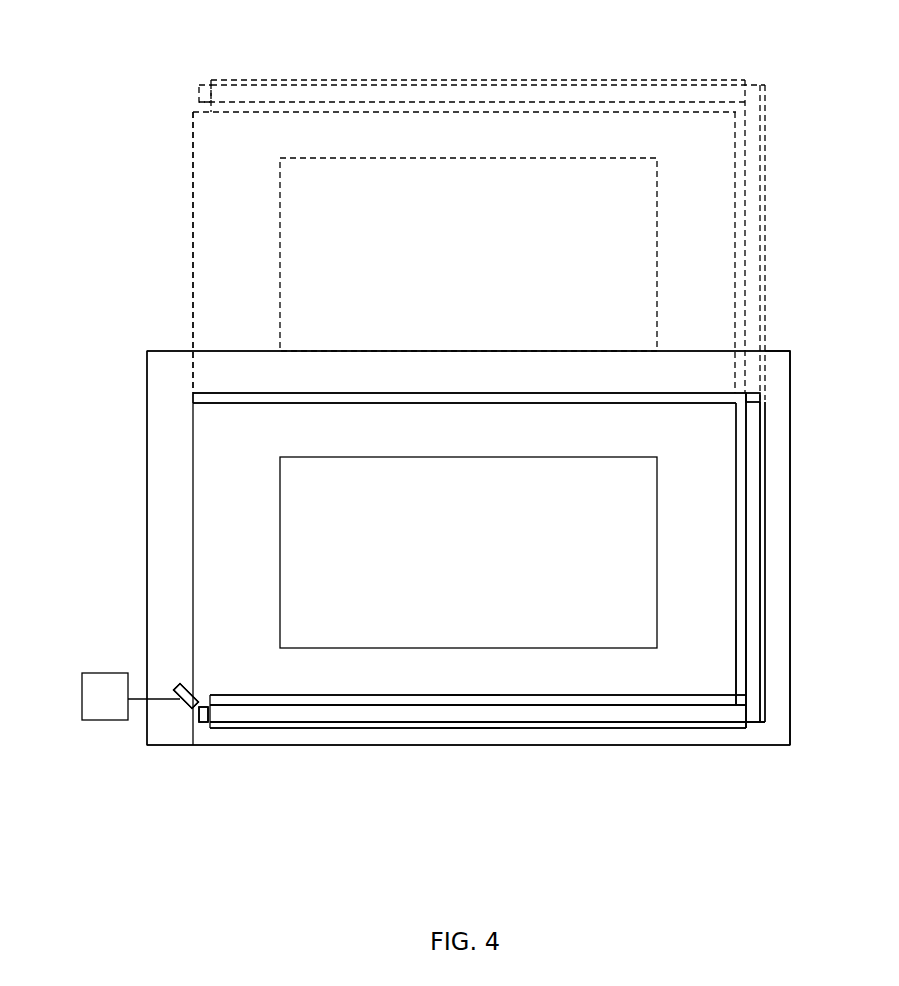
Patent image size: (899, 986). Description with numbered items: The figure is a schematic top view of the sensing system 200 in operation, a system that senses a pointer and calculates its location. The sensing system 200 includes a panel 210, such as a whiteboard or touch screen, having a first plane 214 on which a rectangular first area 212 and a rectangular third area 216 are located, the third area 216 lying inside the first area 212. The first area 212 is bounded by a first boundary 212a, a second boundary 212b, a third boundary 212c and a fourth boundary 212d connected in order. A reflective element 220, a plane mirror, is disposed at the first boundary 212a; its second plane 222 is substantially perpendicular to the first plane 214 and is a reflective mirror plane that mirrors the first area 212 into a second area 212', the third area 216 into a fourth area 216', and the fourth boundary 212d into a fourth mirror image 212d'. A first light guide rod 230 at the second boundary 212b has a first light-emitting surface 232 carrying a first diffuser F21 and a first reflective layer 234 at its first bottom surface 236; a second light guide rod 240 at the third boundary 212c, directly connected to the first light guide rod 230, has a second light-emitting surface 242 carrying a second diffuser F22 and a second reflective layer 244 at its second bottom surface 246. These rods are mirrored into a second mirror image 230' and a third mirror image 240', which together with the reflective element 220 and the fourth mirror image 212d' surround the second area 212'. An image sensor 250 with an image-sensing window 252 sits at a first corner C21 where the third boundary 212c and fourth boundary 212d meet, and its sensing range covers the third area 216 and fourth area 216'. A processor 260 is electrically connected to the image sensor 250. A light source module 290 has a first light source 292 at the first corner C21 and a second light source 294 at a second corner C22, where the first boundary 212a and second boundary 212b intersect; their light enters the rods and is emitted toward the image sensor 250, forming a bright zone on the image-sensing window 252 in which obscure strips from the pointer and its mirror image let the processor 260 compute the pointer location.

The sensing system 200 is at (760, 797).
The panel 210 is at (555, 370).
The first area 212 is at (428, 548).
The first boundary 212a is at (208, 400).
The second boundary 212b is at (738, 660).
The third boundary 212c is at (617, 697).
The fourth boundary 212d is at (127, 548).
The first plane 214 is at (779, 385).
The third area 216 is at (367, 552).
The reflective element 220 is at (695, 400).
The second plane 222 is at (628, 409).
The first light guide rod 230 is at (802, 560).
The first light-emitting surface 232 is at (735, 590).
The first reflective layer 234 is at (763, 565).
The first bottom surface 236 is at (766, 517).
The second light guide rod 240 is at (487, 745).
The second light-emitting surface 242 is at (371, 691).
The second reflective layer 244 is at (683, 722).
The second bottom surface 246 is at (560, 722).
The image sensor 250 is at (185, 706).
The image-sensing window 252 is at (183, 680).
The processor 260 is at (85, 698).
The light source module 290 is at (190, 720).
The first light source 292 is at (205, 722).
The second light source 294 is at (757, 400).
The first corner C21 is at (185, 690).
The second corner C22 is at (740, 395).
The first diffuser F21 is at (738, 632).
The second diffuser F22 is at (468, 700).
The second area 212' is at (399, 252).
The fourth mirror image 212d' is at (129, 252).
The fourth area 216' is at (468, 181).
The second mirror image 230' is at (790, 232).
The third mirror image 240' is at (482, 61).